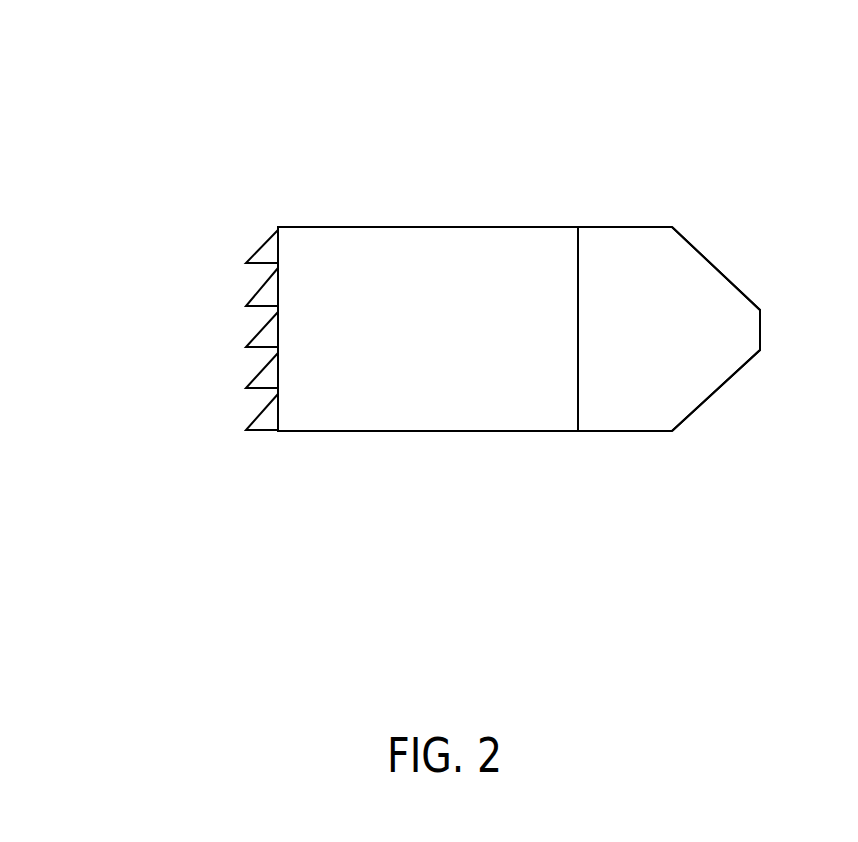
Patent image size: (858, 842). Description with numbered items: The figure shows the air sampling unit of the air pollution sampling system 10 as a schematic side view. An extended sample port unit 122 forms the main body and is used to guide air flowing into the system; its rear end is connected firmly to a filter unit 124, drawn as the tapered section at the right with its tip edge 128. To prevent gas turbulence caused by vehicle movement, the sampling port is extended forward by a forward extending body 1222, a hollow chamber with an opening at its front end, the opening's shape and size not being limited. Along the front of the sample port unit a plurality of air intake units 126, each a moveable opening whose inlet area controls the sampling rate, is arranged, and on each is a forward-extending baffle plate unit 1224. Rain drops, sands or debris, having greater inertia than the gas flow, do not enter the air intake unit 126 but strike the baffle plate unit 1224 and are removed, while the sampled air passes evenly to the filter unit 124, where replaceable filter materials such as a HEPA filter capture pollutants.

The air pollution sampling system 10 is at (164, 145).
The extended sample port unit 122 is at (407, 226).
The filter unit 124 is at (634, 288).
The air intake unit 126 is at (238, 324).
The tip edge 128 is at (774, 328).
The forward extending body 1222 is at (264, 238).
The baffle plate unit 1224 is at (258, 418).